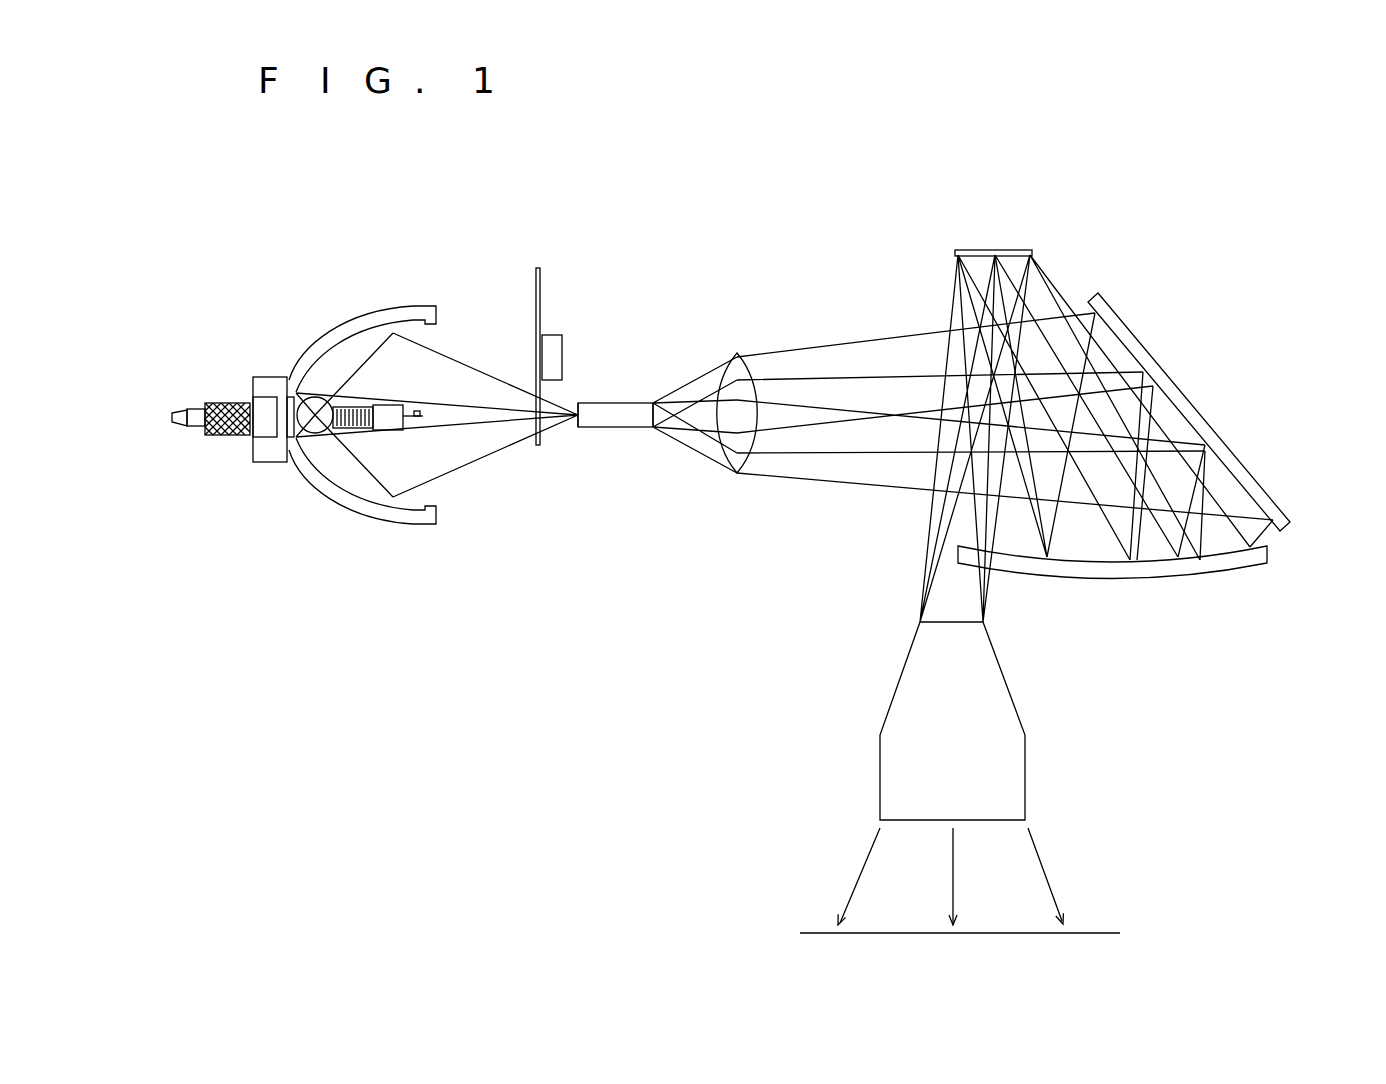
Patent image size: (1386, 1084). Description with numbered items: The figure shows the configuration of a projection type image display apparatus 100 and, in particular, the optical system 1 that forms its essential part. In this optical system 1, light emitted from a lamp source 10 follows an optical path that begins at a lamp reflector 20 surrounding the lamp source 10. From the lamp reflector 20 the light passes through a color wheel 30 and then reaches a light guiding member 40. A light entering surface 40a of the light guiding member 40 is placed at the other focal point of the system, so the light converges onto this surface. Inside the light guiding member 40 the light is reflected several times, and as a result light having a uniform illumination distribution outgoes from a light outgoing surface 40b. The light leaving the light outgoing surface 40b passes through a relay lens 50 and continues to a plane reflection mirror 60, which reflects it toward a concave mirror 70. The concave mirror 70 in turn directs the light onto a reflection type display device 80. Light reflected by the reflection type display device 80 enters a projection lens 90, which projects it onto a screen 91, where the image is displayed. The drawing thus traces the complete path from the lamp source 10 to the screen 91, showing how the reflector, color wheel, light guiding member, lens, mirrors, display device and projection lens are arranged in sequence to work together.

The projection type image display apparatus 100 is at (283, 197).
The optical system 1 is at (310, 302).
The lamp source 10 is at (306, 450).
The lamp reflector 20 is at (376, 516).
The color wheel 30 is at (536, 275).
The light guiding member 40 is at (604, 428).
The light entering surface 40a is at (571, 436).
The light outgoing surface 40b is at (652, 437).
The relay lens 50 is at (738, 475).
The plane reflection mirror 60 is at (1210, 420).
The concave mirror 70 is at (1174, 578).
The reflection type display device 80 is at (1000, 250).
The projection lens 90 is at (1025, 718).
The screen 91 is at (1100, 933).